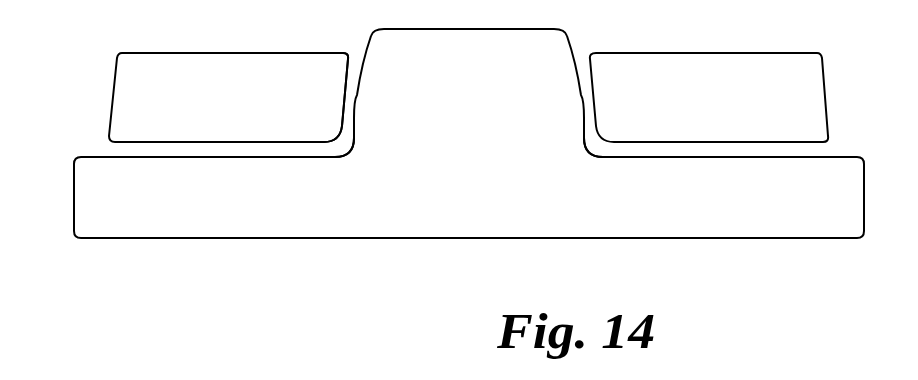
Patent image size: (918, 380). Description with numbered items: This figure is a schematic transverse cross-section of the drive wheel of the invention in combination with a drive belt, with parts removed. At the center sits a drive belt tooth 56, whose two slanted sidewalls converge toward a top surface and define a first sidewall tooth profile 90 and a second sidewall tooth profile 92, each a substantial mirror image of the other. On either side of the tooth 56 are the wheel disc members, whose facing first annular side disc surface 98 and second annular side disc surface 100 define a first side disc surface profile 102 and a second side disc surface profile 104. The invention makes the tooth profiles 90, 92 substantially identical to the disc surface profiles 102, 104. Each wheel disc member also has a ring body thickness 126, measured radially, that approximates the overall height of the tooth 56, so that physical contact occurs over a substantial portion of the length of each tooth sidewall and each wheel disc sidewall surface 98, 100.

The drive belt tooth 56 is at (367, 228).
The first sidewall tooth profile 90 is at (380, 31).
The second sidewall tooth profile 92 is at (558, 31).
The first annular side disc surface 98 is at (356, 112).
The second annular side disc surface 100 is at (582, 122).
The first side disc surface profile 102 is at (333, 55).
The second side disc surface profile 104 is at (594, 54).
The ring body thickness 126 is at (105, 53).